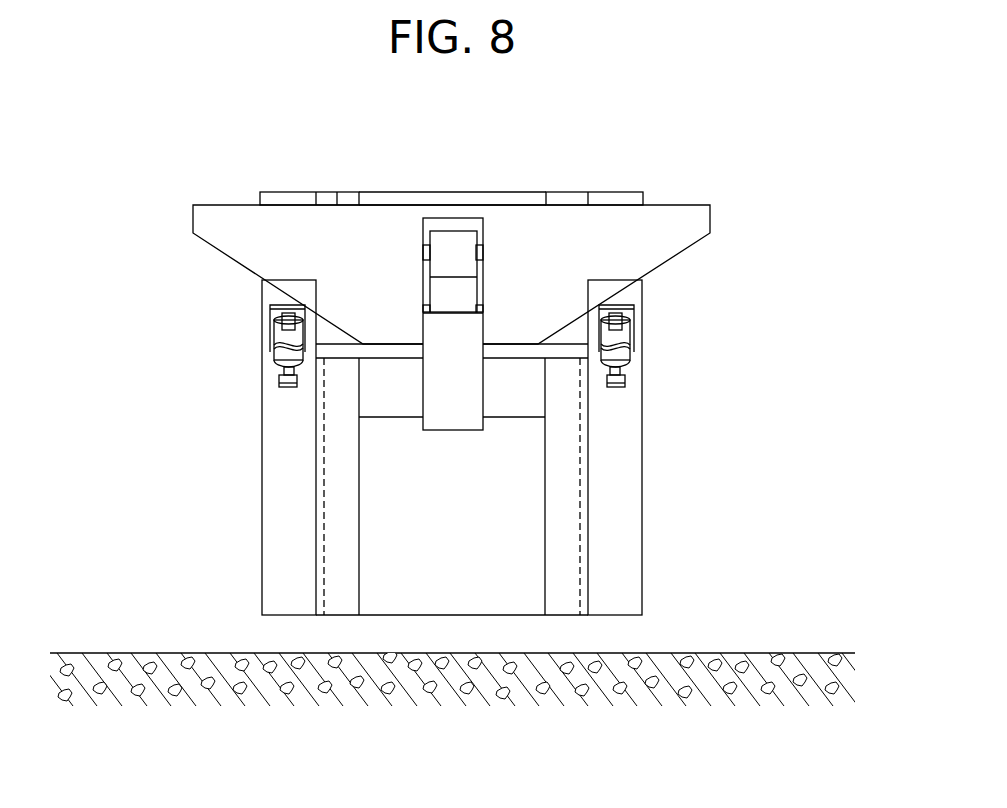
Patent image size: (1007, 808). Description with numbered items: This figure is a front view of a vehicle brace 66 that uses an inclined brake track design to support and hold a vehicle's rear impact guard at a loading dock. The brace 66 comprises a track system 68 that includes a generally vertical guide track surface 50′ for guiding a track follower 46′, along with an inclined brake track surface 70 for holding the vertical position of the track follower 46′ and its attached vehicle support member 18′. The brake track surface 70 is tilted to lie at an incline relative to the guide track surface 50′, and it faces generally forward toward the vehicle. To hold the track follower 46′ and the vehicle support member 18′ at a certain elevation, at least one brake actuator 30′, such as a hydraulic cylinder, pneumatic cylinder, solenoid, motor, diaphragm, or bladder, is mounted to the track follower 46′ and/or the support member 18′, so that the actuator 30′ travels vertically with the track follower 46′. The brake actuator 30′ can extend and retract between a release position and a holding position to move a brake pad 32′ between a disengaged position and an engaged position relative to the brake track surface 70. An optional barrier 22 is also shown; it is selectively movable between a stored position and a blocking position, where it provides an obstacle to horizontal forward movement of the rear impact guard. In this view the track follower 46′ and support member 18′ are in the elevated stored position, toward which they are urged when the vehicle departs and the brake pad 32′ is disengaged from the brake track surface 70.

The vehicle brace 66 is at (748, 158).
The vehicle support member 18′ is at (337, 192).
The track system 68 is at (566, 192).
The barrier 22 is at (427, 285).
The brake actuator 30′ is at (270, 362).
The brake pad 32′ is at (288, 387).
The brake track surface 70 is at (285, 438).
The track follower 46′ is at (507, 418).
The guide track surface 50′ is at (324, 532).